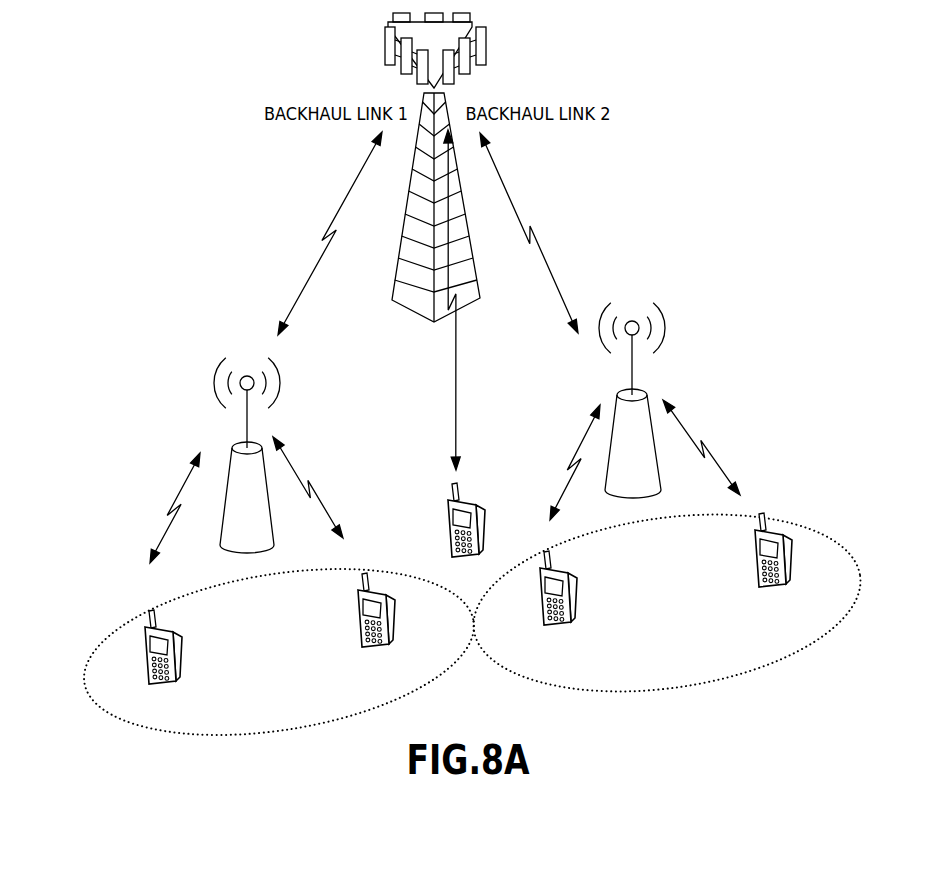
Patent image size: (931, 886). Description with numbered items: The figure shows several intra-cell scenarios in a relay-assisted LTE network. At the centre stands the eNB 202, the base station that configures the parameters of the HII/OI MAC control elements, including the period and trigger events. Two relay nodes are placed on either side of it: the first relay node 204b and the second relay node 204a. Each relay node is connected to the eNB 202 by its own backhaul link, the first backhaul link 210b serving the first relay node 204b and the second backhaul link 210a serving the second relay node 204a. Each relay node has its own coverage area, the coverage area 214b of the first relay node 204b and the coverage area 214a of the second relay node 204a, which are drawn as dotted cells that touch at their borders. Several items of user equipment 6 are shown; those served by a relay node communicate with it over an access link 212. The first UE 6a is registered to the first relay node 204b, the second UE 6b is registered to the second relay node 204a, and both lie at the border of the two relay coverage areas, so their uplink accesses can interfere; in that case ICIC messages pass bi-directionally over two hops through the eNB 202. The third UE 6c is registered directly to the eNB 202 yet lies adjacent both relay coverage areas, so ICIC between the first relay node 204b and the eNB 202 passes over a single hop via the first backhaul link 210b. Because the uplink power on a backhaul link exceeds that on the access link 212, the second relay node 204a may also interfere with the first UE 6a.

The eNB 202 is at (474, 32).
The second relay node 204a is at (627, 392).
The first relay node 204b is at (236, 447).
The second backhaul link 210a is at (534, 225).
The first backhaul link 210b is at (323, 232).
The access link 212 is at (168, 502).
The coverage area of second relay node 214a is at (813, 525).
The coverage area of first relay node 214b is at (123, 628).
The user equipment 6 is at (182, 645).
The first UE 6a is at (358, 610).
The second UE 6b is at (575, 585).
The third UE 6c is at (448, 545).